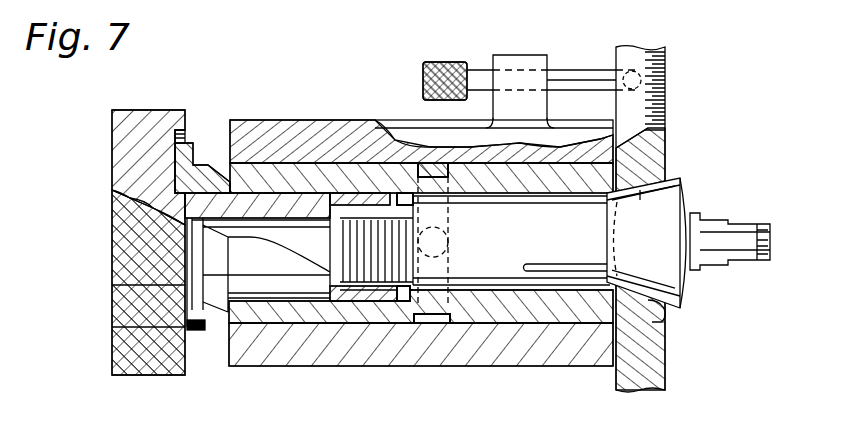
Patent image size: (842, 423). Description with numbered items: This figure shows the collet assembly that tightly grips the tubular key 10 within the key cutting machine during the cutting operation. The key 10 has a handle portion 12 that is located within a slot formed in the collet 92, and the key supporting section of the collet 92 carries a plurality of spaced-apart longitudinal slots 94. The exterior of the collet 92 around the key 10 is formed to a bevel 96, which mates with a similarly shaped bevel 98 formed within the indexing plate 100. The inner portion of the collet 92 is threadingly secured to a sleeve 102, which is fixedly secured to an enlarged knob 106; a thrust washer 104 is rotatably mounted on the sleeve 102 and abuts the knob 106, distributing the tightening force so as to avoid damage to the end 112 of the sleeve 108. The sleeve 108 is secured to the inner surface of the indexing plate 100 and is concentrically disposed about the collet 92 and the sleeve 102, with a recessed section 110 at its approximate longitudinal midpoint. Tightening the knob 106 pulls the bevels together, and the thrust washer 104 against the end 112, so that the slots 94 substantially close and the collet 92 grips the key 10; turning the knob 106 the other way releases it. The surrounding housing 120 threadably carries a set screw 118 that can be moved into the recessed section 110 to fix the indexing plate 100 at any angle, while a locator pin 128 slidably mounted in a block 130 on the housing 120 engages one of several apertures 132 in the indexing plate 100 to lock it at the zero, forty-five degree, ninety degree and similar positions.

The tubular key 10 is at (752, 220).
The handle portion 12 is at (680, 305).
The collet 92 is at (680, 185).
The longitudinal slots 94 is at (648, 275).
The bevel 96 is at (667, 336).
The bevel 98 is at (606, 198).
The indexing plate 100 is at (668, 114).
The sleeve 102 is at (364, 188).
The thrust washer 104 is at (200, 333).
The knob 106 is at (125, 357).
The sleeve 108 is at (538, 313).
The recessed section 110 is at (445, 324).
The end of the sleeve 112 is at (220, 170).
The set screw 118 is at (450, 228).
The housing 120 is at (297, 120).
The locator pin 128 is at (552, 78).
The block 130 is at (497, 57).
The apertures 132 is at (614, 68).